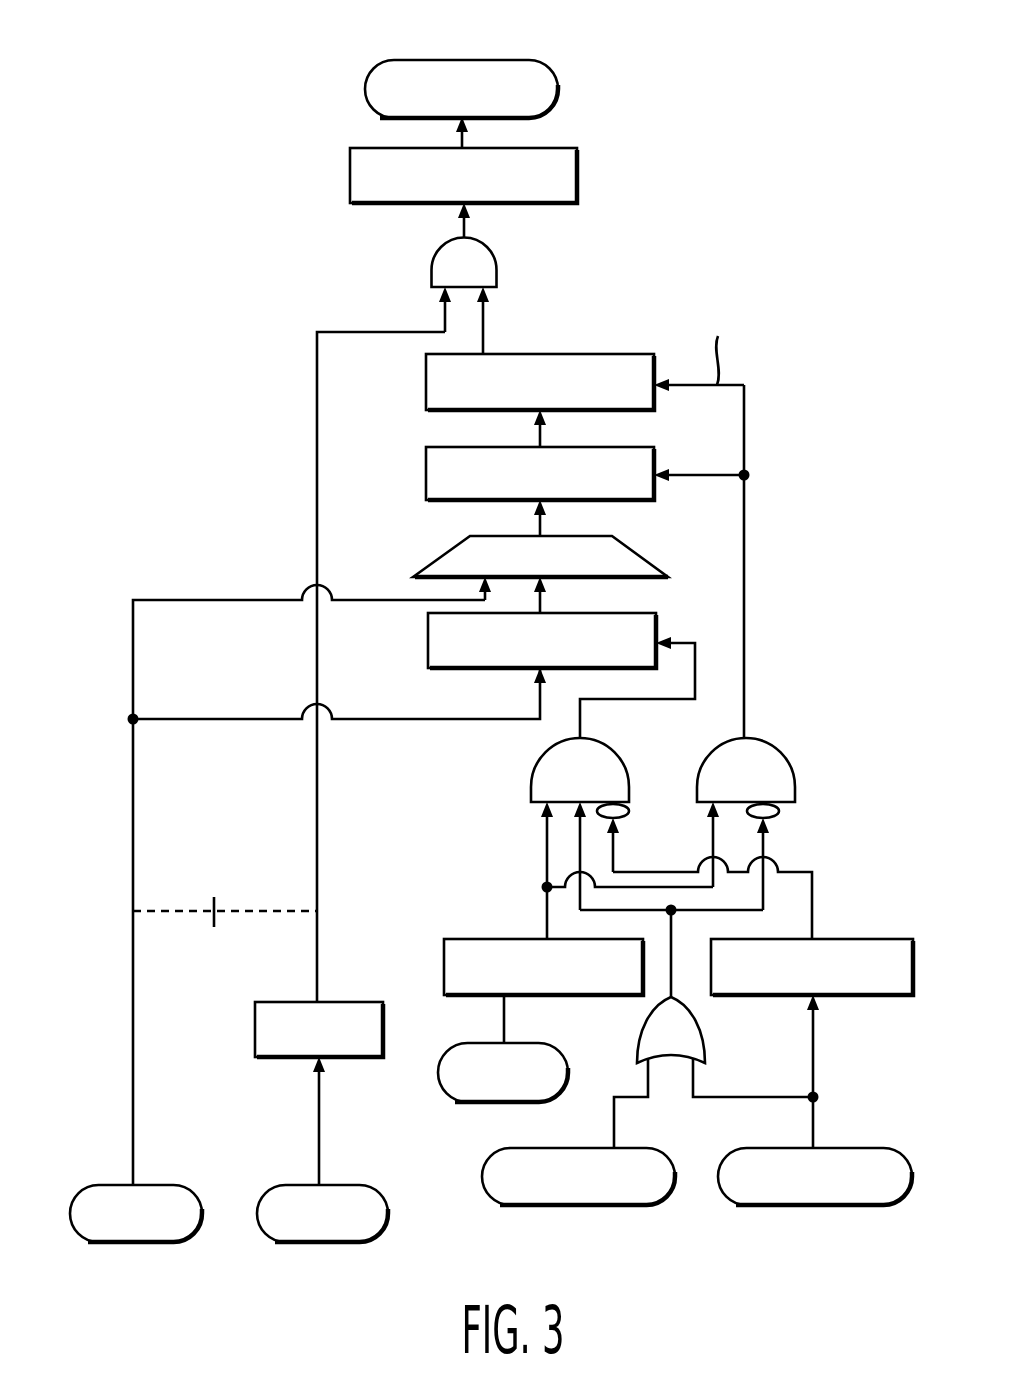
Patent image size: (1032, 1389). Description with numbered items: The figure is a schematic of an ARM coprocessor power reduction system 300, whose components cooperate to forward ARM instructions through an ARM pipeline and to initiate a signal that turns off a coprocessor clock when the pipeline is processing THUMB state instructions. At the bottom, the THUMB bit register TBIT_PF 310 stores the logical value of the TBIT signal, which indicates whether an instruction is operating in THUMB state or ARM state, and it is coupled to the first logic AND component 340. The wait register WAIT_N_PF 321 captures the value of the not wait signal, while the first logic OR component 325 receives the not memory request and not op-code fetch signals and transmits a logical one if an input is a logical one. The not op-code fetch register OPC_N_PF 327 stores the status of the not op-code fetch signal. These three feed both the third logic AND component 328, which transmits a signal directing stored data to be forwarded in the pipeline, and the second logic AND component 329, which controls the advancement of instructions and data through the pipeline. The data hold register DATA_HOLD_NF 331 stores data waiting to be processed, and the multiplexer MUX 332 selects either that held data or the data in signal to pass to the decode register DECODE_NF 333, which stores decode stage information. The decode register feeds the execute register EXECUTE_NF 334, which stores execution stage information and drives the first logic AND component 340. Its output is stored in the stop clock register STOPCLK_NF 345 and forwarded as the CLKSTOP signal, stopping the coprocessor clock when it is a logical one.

The ARM coprocessor power reduction system 300 is at (478, 31).
The stop clock register STOPCLK_NF 345 is at (350, 168).
The first logic AND component 340 is at (431, 260).
The execute register EXECUTE_NF 334 is at (613, 354).
The decode register DECODE_NF 333 is at (426, 463).
The multiplexer MUX 332 is at (437, 557).
The data hold register DATA_HOLD_NF 331 is at (428, 646).
The third logic AND component 328 is at (596, 787).
The second logic AND component 329 is at (762, 787).
The wait register WAIT_N_PF 321 is at (472, 939).
The not op-code fetch register OPC_N_PF 327 is at (882, 939).
The first logic OR component 325 is at (688, 1043).
The THUMB bit register TBIT_PF 310 is at (255, 1030).